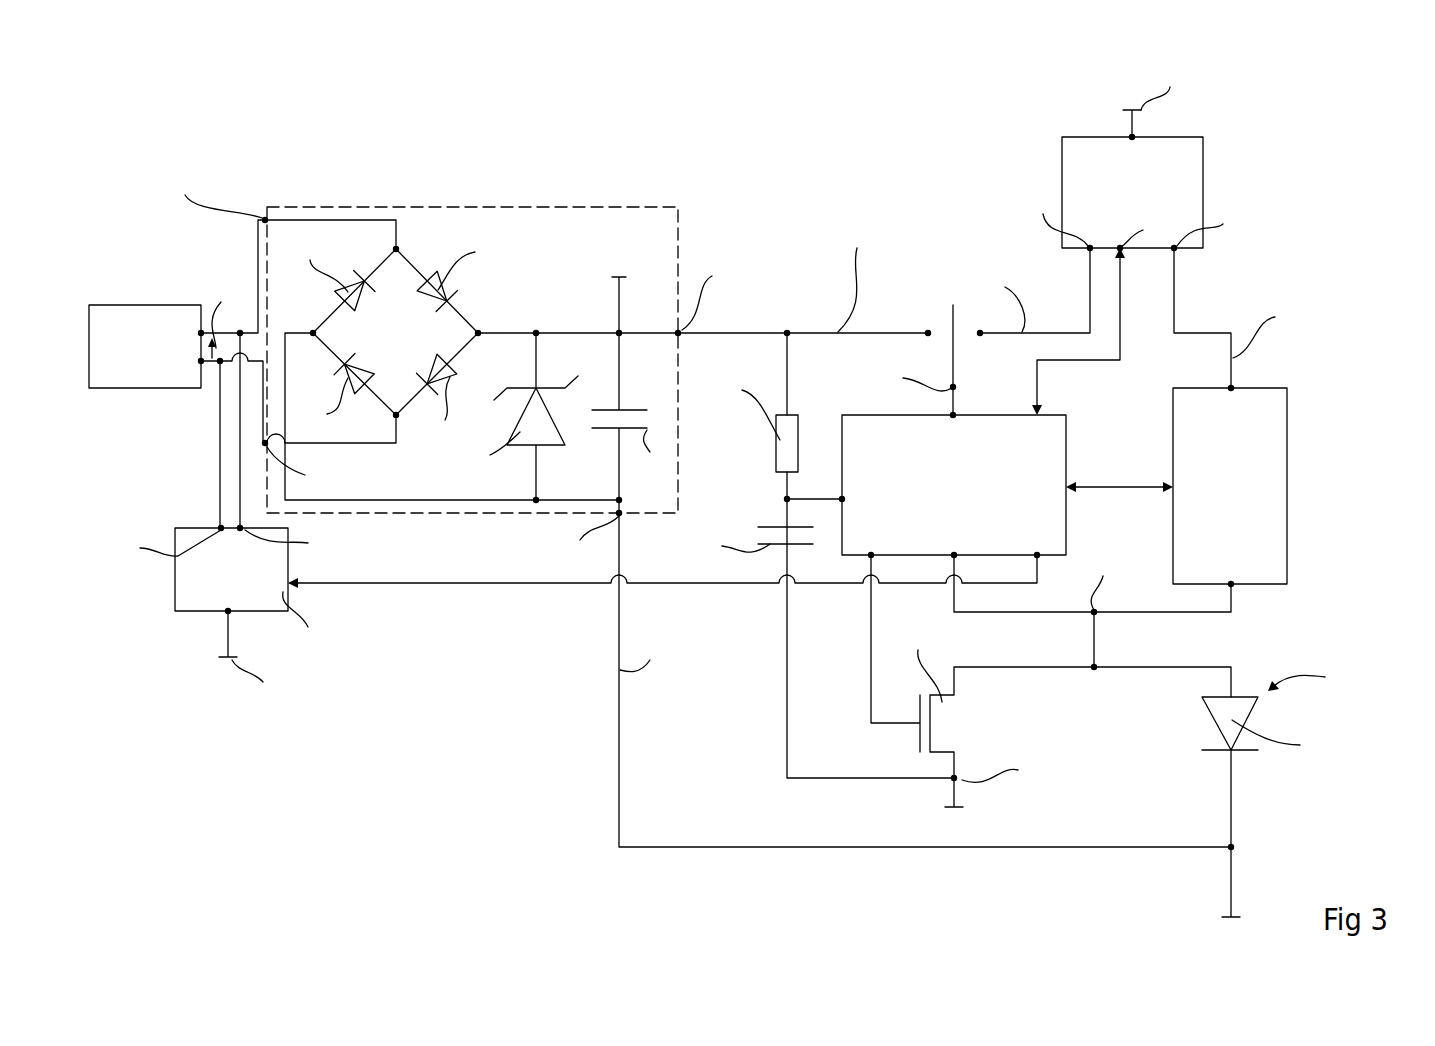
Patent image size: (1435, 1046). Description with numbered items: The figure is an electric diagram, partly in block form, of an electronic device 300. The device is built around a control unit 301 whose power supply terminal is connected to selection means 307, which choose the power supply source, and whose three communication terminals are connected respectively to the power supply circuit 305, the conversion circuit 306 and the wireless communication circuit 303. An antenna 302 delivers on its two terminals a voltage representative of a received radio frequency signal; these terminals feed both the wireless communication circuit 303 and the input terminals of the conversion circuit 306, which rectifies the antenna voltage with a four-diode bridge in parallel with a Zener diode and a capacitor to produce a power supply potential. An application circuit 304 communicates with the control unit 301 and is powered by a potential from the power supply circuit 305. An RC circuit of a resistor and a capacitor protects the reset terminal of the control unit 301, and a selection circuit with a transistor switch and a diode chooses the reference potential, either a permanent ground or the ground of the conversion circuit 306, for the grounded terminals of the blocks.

The electronic device 300 is at (88, 140).
The control unit 301 is at (1066, 503).
The antenna 302 is at (112, 305).
The wireless communication circuit 303 is at (175, 597).
The circuit of implementation of applications 304 is at (1288, 490).
The power supply circuit 305 is at (1205, 177).
The conversion circuit 306 is at (603, 207).
The selection means 307 is at (939, 325).